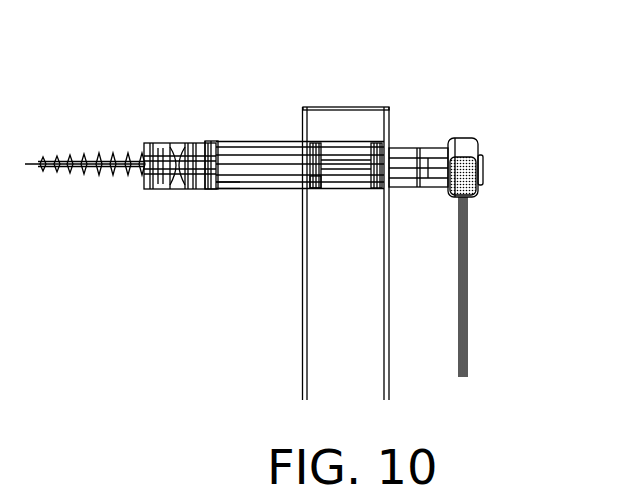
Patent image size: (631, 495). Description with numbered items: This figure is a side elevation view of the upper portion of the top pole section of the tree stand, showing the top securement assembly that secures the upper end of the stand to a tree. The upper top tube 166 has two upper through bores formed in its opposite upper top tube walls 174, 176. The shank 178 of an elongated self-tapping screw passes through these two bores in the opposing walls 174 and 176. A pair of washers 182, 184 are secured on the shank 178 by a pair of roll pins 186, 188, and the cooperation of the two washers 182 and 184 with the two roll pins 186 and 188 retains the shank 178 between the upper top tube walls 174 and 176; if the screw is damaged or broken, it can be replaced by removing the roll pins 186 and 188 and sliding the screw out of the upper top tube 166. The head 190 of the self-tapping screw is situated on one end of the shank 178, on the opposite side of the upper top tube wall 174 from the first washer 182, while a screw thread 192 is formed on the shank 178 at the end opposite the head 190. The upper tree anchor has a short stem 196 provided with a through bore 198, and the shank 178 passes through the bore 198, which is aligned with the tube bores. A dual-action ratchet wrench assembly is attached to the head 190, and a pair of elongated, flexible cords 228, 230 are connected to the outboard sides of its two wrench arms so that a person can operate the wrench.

The screw thread 192 is at (80, 130).
The short stem 196 is at (207, 143).
The through bore 198 is at (228, 188).
The washer 182 is at (368, 143).
The shank 178 is at (345, 172).
The upper top tube 166 is at (319, 213).
The upper top tube wall 176 is at (300, 112).
The upper top tube wall 174 is at (391, 143).
The washer 184 is at (313, 143).
The roll pin 188 is at (316, 190).
The roll pin 186 is at (378, 190).
The head 190 is at (407, 158).
The flexible cord 228 is at (470, 297).
The flexible cord 230 is at (530, 287).